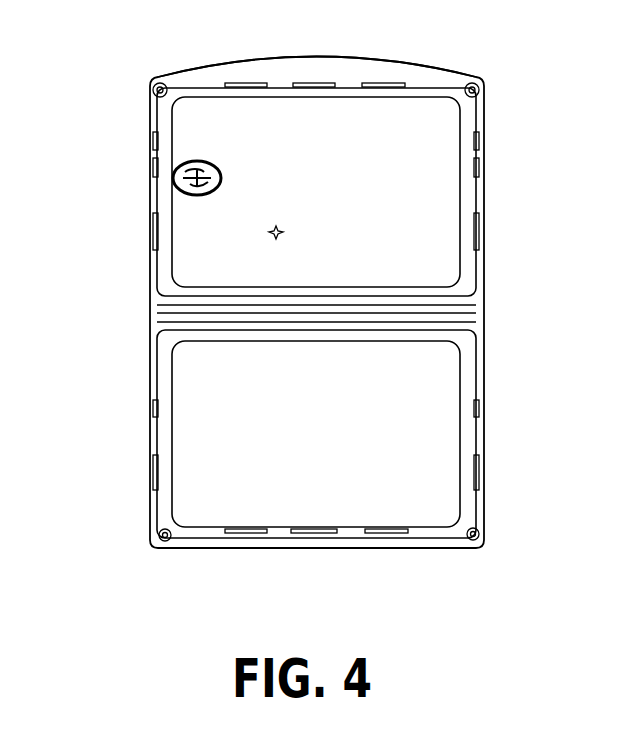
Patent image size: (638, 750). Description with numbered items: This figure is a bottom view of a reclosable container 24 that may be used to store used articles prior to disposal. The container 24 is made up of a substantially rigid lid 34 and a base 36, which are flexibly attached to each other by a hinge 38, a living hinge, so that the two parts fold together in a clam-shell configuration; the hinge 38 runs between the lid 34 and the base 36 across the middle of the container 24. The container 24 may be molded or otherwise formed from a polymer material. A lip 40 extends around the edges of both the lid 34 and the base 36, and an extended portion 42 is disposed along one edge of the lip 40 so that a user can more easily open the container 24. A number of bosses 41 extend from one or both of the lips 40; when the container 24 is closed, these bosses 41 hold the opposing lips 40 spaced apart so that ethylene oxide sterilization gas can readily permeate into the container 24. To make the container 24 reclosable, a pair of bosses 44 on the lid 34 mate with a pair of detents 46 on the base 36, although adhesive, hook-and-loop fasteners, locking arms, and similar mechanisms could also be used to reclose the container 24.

The container 24 is at (185, 503).
The lid 34 is at (180, 206).
The base 36 is at (205, 437).
The hinge 38 is at (473, 308).
The lip 40 is at (480, 108).
The bosses 41 is at (483, 240).
The extended portion 42 is at (327, 70).
The bosses 44 is at (158, 88).
The detents 46 is at (160, 540).